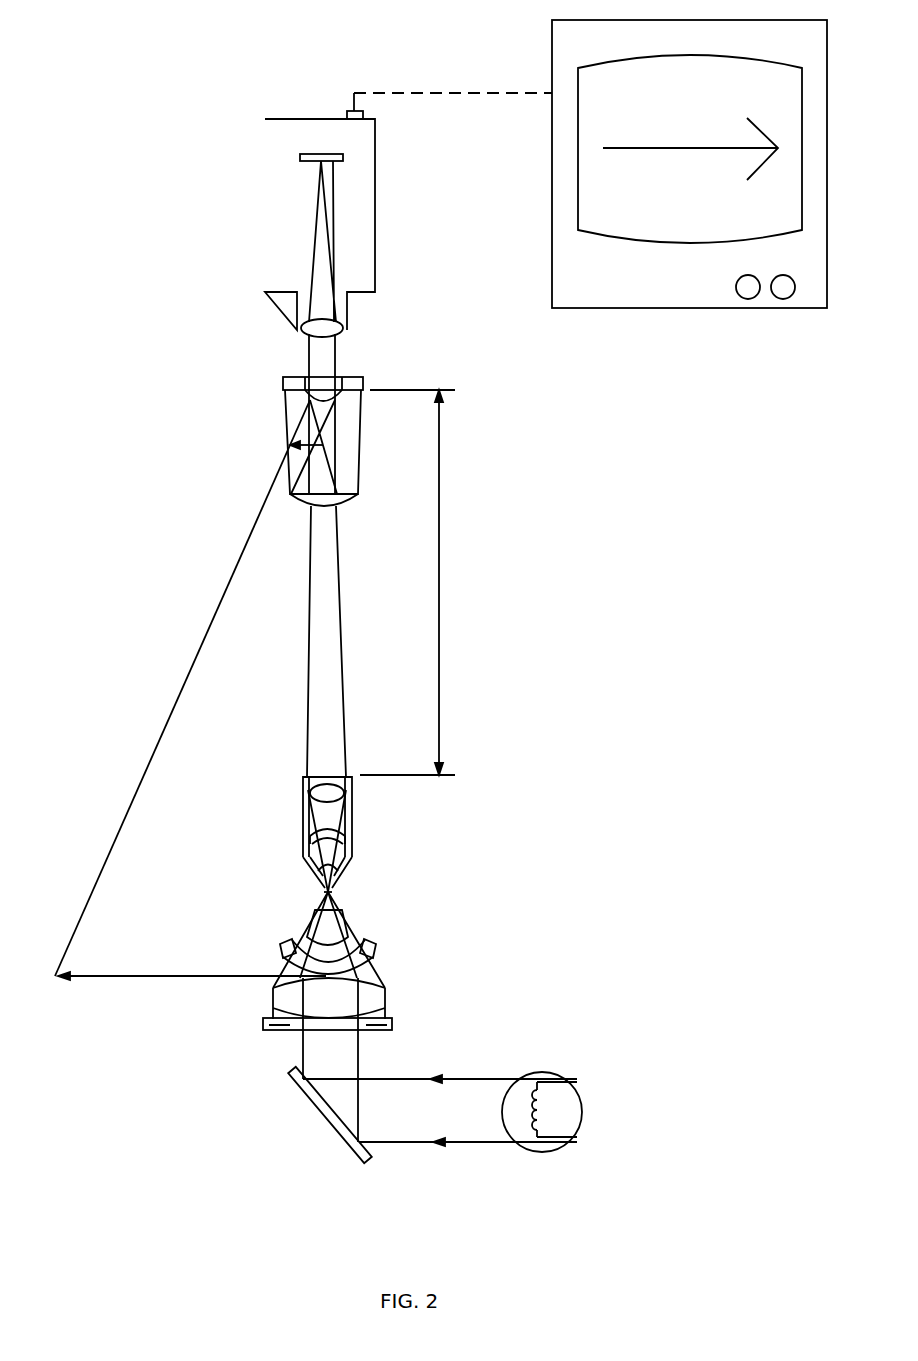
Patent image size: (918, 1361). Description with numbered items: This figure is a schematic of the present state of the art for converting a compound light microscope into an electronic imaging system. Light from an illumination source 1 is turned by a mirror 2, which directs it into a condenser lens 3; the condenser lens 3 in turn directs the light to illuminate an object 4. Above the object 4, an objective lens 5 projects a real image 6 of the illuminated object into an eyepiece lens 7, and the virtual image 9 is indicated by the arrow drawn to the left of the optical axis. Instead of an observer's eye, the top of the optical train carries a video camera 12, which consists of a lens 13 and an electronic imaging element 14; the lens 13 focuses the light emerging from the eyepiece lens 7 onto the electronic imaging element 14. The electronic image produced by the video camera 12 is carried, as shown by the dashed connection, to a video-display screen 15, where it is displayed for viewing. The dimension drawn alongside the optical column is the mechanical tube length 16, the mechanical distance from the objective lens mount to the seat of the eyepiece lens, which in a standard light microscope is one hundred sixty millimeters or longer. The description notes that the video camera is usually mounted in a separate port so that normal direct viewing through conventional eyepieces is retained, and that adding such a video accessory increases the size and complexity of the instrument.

The illumination source 1 is at (545, 1157).
The mirror 2 is at (318, 1118).
The condenser lens 3 is at (393, 1020).
The object 4 is at (330, 890).
The objective lens 5 is at (299, 813).
The real image 6 is at (285, 443).
The eyepiece lens 7 is at (364, 465).
The virtual image 9 is at (157, 980).
The video camera 12 is at (378, 260).
The lens 13 is at (305, 332).
The electronic imaging element 14 is at (300, 155).
The video-display screen 15 is at (618, 314).
The mechanical tube length 16 is at (443, 620).